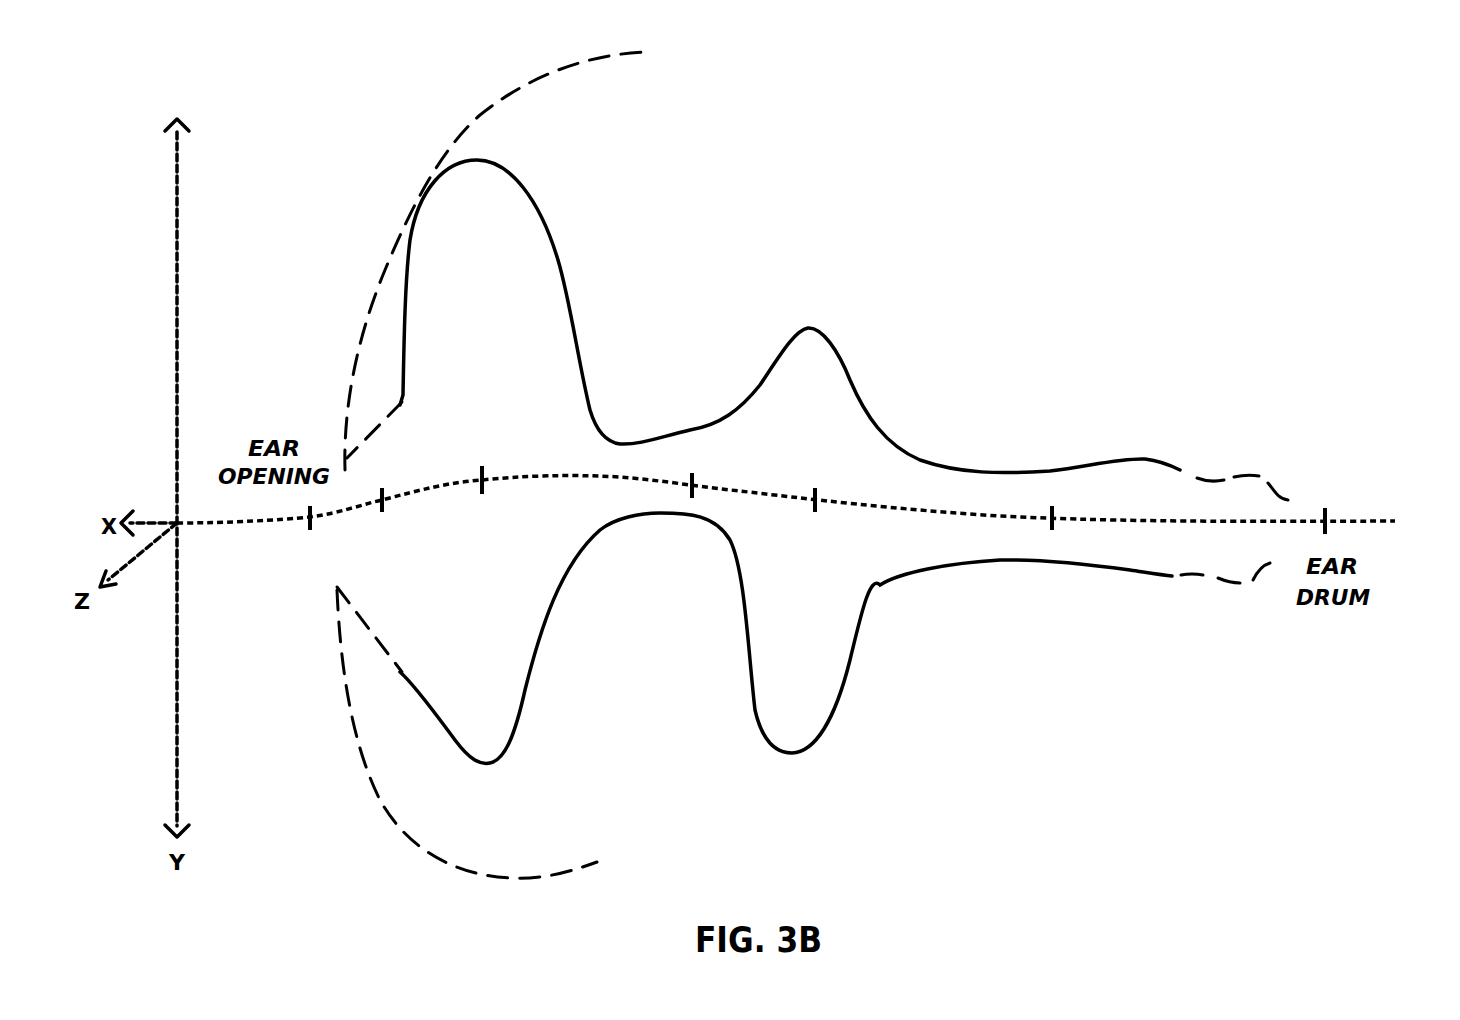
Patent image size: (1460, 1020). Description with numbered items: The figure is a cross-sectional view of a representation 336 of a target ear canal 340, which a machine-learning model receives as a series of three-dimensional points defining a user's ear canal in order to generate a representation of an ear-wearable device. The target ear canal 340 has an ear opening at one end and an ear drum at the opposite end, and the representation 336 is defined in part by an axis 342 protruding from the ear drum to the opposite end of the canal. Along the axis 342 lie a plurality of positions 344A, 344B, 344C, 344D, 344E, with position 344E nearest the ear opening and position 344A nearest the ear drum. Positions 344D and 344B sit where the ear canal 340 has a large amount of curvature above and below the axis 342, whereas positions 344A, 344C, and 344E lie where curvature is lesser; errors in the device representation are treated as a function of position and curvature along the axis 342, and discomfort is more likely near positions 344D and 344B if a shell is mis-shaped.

The representation 336 is at (812, 465).
The target ear canal 340 is at (515, 172).
The axis 342 is at (1375, 517).
The position 344A is at (1049, 531).
The position 344B is at (814, 514).
The position 344C is at (689, 471).
The position 344D is at (476, 493).
The position 344E is at (377, 515).